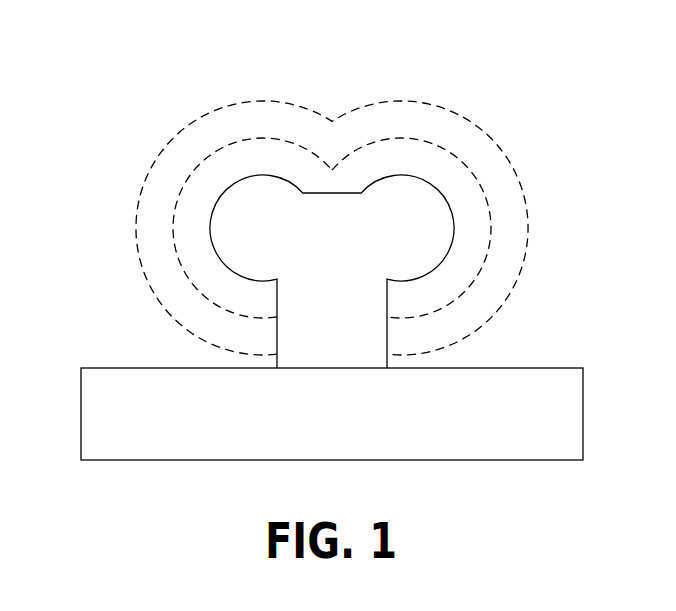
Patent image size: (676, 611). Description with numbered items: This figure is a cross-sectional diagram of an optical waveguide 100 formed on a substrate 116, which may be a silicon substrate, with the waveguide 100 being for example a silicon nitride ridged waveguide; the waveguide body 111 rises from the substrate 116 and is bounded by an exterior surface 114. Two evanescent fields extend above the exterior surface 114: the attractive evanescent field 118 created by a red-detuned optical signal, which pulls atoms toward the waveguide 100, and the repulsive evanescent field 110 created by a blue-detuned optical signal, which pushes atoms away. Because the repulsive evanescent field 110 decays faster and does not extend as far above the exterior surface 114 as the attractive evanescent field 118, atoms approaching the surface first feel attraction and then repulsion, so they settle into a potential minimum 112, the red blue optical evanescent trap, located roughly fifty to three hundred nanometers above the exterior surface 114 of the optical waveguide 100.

The optical waveguide 100 is at (350, 24).
The repulsive evanescent field 110 is at (468, 192).
The T-shaped body 111 is at (250, 235).
The potential minimum 112 is at (332, 168).
The exterior surface 114 is at (213, 212).
The substrate 116 is at (117, 428).
The attractive evanescent field 118 is at (512, 250).